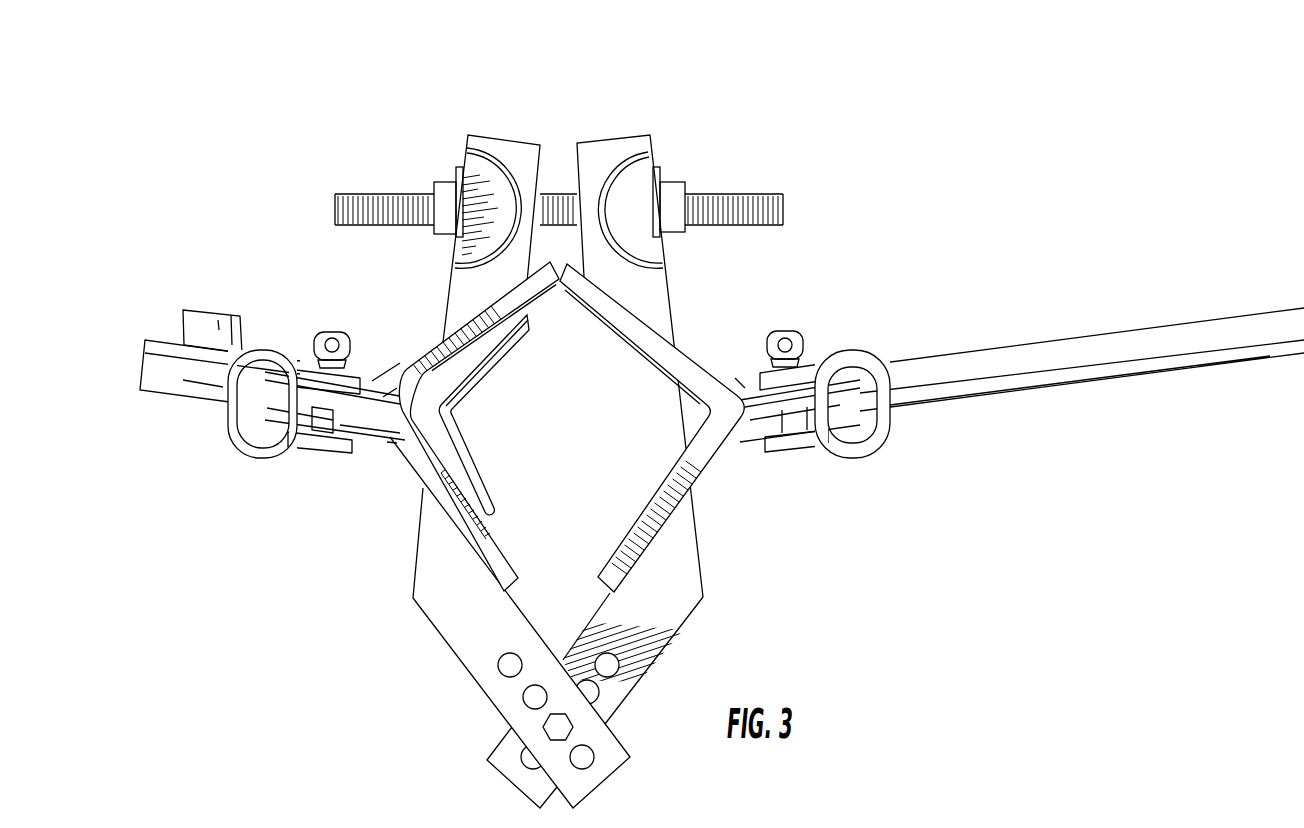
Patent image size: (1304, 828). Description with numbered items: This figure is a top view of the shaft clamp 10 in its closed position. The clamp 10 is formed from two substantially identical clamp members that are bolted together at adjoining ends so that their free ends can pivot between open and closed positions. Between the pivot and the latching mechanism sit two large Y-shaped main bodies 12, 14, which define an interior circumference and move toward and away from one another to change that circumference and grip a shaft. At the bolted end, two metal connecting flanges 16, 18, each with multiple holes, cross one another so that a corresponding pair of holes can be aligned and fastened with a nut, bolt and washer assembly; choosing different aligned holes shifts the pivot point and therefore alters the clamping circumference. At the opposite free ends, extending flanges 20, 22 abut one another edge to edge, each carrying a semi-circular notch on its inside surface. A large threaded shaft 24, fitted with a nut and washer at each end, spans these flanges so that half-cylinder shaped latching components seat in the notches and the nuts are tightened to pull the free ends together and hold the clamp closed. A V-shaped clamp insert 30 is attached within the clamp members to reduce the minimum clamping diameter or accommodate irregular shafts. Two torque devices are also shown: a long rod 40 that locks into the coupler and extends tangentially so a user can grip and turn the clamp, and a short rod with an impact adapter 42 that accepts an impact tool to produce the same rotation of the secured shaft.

The shaft clamp 10 is at (722, 428).
The Y-shaped main body 12 is at (656, 352).
The Y-shaped main body 14 is at (512, 415).
The connecting flange 16 is at (673, 622).
The connecting flange 18 is at (455, 622).
The extending flange 20 is at (620, 145).
The extending flange 22 is at (507, 147).
The threaded shaft 24 is at (757, 225).
The clamp insert 30 is at (470, 458).
The long rod 40 is at (1065, 385).
The short rod with impact adapter 42 is at (162, 398).